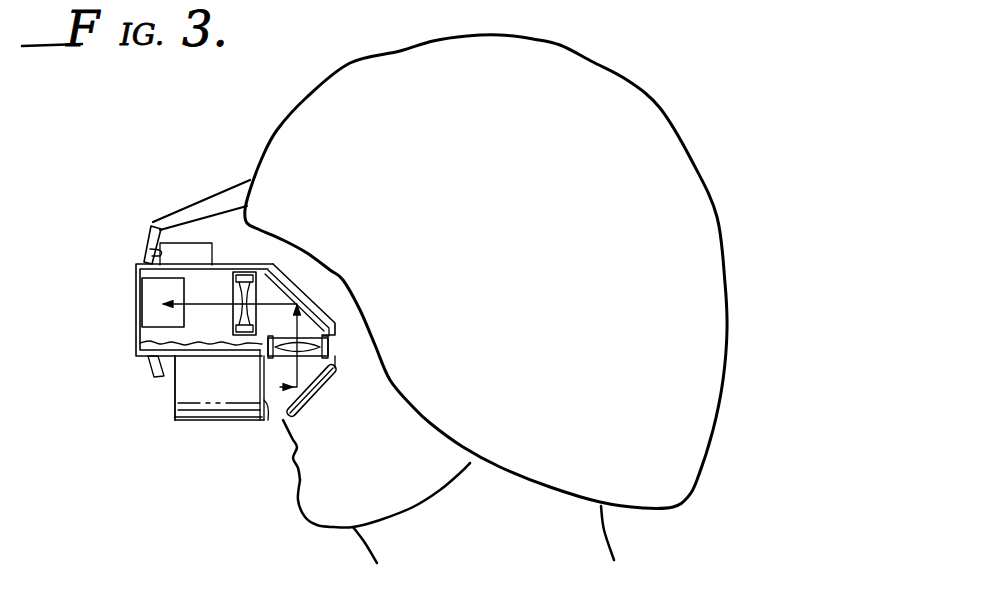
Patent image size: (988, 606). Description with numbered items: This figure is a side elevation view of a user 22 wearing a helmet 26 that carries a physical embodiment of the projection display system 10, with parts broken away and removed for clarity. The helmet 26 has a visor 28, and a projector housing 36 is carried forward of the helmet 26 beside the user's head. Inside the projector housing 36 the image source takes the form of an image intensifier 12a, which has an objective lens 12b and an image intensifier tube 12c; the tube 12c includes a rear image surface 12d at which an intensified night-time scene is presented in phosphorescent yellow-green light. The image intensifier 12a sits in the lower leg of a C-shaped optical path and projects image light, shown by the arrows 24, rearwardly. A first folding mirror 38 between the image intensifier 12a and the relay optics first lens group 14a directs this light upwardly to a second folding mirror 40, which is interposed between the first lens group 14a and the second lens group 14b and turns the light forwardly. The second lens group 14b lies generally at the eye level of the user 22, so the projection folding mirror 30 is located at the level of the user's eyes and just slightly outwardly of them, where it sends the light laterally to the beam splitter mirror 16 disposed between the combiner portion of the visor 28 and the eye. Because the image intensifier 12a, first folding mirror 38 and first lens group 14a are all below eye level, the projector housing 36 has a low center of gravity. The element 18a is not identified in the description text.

The projection display system 10 is at (232, 445).
The image intensifier 12a is at (203, 397).
The objective lens 12b is at (175, 394).
The image intensifier tube 12c is at (217, 418).
The rear image surface 12d is at (277, 399).
The relay optics first lens group 14a is at (325, 343).
The second lens group 14b is at (258, 272).
The beam splitter mirror 16 is at (183, 247).
The clip 18a is at (150, 249).
The user 22 is at (405, 435).
The arrows 24 is at (296, 420).
The helmet 26 is at (572, 205).
The visor 28 is at (148, 234).
The projection folding mirror 30 is at (145, 291).
The projector housing 36 is at (138, 349).
The first folding mirror 38 is at (327, 391).
The second folding mirror 40 is at (312, 300).